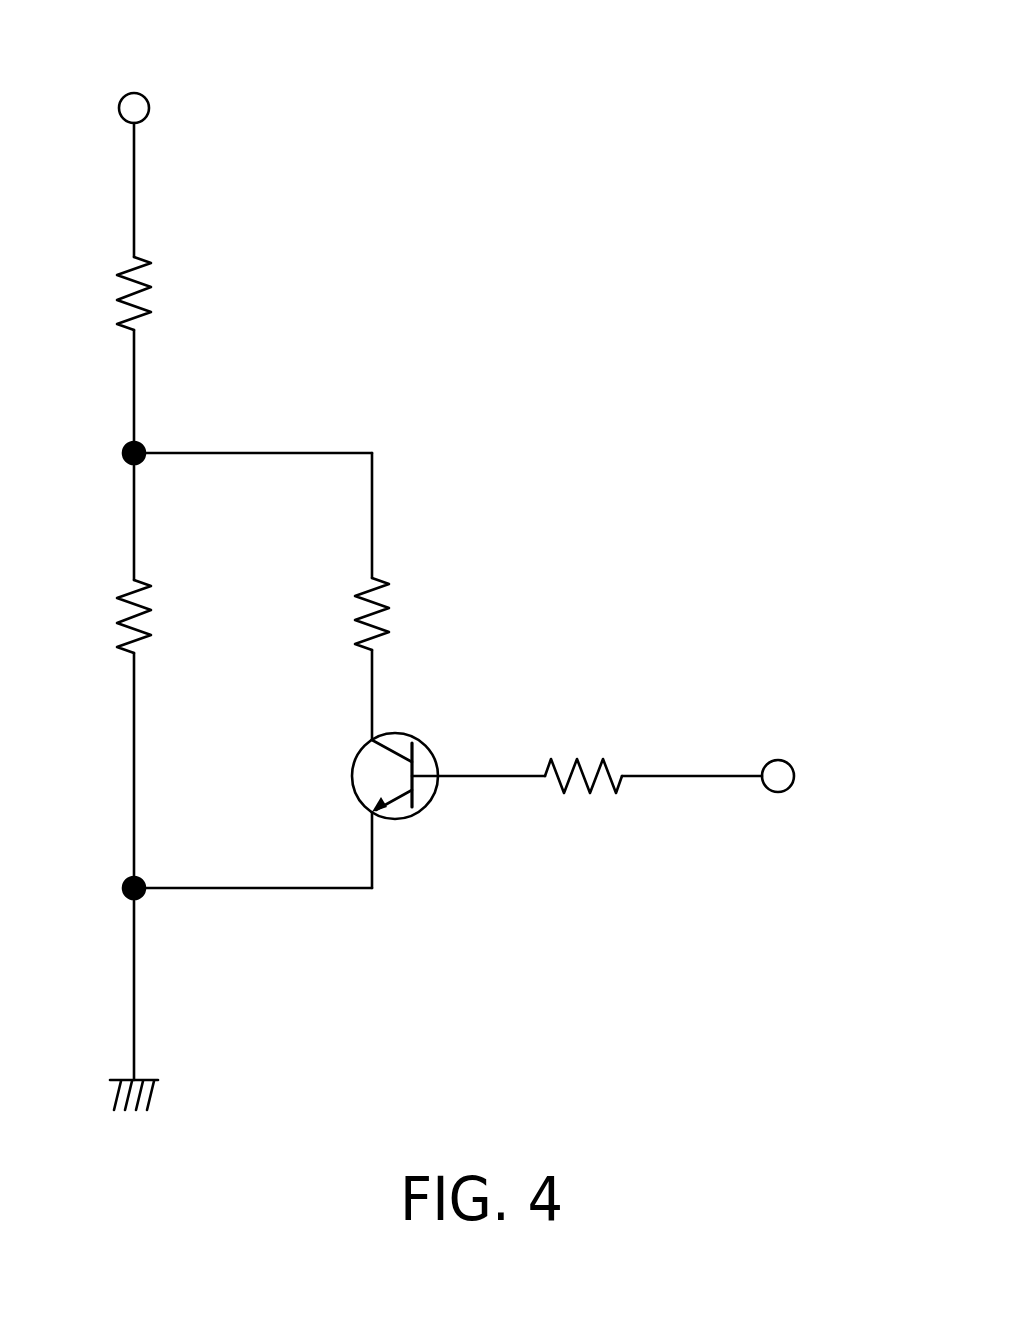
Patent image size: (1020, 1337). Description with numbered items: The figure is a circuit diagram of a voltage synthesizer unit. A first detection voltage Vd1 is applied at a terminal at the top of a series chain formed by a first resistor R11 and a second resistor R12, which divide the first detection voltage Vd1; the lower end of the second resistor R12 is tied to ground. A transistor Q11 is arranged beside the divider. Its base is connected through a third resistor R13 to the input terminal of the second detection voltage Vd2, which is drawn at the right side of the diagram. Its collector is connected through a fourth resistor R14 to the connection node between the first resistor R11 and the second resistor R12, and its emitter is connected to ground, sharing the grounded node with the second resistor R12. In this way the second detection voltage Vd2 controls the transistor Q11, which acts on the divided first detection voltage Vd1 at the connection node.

The first detection voltage Vd1 is at (138, 144).
The first resistor R11 is at (177, 293).
The second resistor R12 is at (177, 616).
The third resistor R13 is at (583, 749).
The fourth resistor R14 is at (416, 551).
The transistor Q11 is at (448, 802).
The second detection voltage Vd2 is at (750, 776).